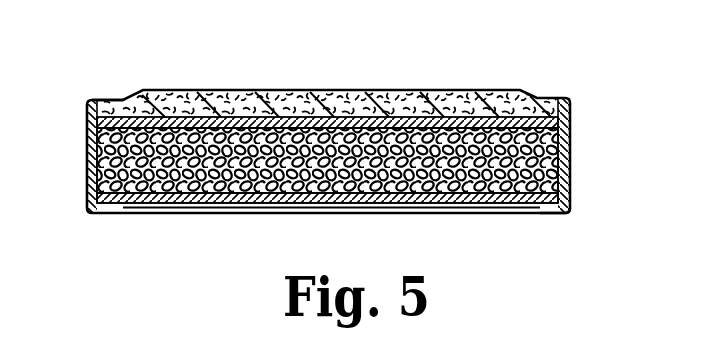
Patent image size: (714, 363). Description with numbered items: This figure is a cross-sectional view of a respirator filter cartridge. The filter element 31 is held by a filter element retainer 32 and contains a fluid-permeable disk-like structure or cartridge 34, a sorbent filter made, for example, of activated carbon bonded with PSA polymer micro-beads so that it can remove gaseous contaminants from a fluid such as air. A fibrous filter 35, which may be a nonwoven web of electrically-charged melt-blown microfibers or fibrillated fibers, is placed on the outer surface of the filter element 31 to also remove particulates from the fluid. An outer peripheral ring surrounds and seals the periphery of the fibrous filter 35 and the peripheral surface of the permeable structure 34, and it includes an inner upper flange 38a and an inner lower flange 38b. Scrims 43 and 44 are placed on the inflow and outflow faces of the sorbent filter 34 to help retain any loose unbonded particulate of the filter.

The filter element 31 is at (405, 56).
The filter element retainer 32 is at (88, 170).
The fluid-permeable disk-like structure or cartridge 34 is at (330, 200).
The fibrous filter 35 is at (483, 93).
The inner upper flange 38a is at (105, 112).
The inner lower flange 38b is at (548, 212).
The scrim 43 is at (235, 113).
The scrim 44 is at (473, 203).